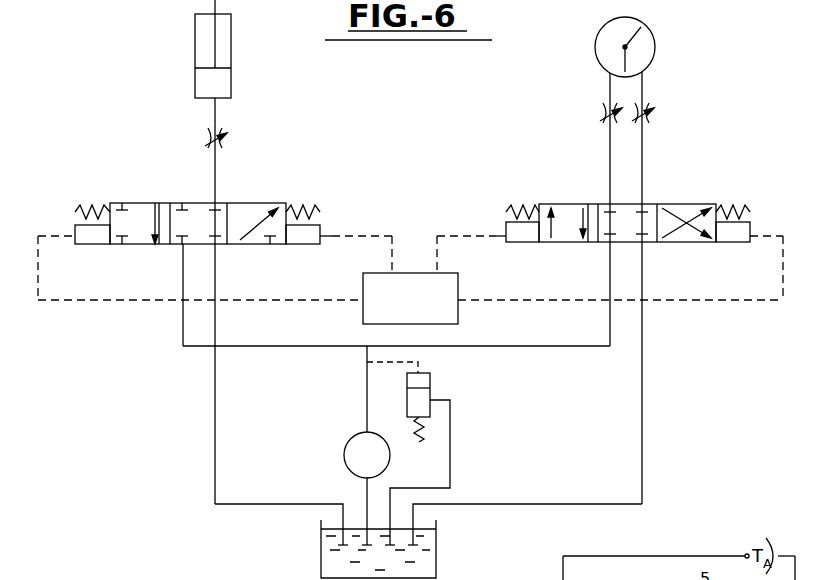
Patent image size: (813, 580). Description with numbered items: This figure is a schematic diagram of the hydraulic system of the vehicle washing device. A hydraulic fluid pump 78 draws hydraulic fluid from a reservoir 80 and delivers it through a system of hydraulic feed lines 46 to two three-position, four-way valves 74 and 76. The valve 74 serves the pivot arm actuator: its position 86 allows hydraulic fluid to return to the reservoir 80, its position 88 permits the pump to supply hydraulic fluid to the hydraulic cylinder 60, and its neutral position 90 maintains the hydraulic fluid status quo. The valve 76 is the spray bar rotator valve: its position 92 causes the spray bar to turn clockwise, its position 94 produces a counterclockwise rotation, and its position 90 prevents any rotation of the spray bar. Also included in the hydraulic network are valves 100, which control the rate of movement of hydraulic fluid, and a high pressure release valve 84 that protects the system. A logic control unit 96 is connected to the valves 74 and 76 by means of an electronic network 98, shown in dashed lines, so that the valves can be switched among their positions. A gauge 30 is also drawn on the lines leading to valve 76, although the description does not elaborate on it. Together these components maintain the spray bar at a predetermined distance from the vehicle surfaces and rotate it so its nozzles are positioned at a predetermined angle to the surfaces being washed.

The hydraulic cylinder 60 is at (233, 40).
The pressure gauge 30 is at (595, 42).
The valves 100 is at (208, 135).
The three position-four way valve 74 is at (215, 214).
The position 86 is at (138, 203).
The neutral position 90 is at (190, 203).
The position 88 is at (260, 245).
The three position-four way valve 76 is at (610, 211).
The position 92 is at (568, 244).
The position 94 is at (713, 244).
The logic control unit 96 is at (460, 313).
The electronic network 98 is at (135, 305).
The hydraulic feed lines 46 is at (215, 405).
The hydraulic fluid pump 78 is at (345, 448).
The high pressure release valve 84 is at (431, 388).
The reservoir 80 is at (321, 547).